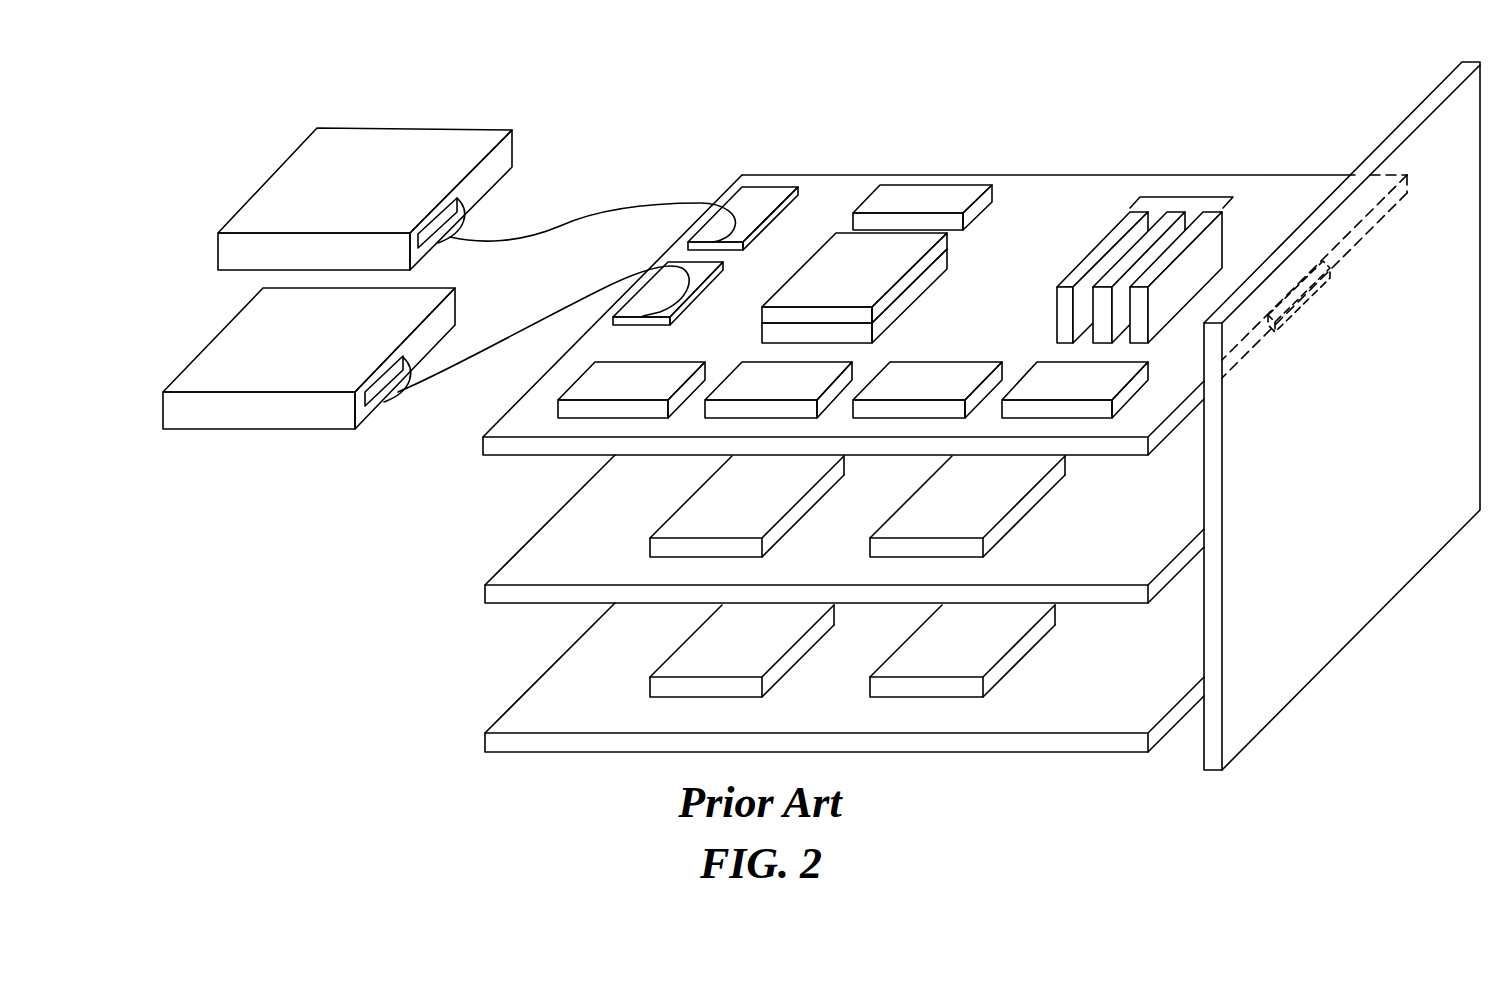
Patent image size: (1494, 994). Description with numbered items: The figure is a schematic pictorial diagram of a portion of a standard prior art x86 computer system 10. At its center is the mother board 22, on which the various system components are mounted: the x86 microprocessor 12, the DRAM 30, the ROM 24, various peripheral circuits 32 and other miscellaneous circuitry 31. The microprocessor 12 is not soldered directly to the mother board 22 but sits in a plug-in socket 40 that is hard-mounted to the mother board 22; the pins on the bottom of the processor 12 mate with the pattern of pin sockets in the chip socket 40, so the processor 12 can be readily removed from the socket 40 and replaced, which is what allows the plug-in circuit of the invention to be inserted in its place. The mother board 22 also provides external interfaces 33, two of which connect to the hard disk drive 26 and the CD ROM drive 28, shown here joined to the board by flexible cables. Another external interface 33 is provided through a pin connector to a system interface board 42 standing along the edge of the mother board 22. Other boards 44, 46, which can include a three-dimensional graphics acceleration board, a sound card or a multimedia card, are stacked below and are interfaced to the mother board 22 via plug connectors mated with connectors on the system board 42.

The x86 computer system 10 is at (941, 78).
The x86 microprocessor 12 is at (937, 248).
The mother board 22 is at (1078, 173).
The ROM 24 is at (927, 180).
The hard disk drive 26 is at (512, 156).
The CD ROM drive 28 is at (457, 310).
The DRAM 30 is at (1185, 198).
The miscellaneous circuitry 31 is at (1140, 380).
The peripheral circuits 32 is at (907, 408).
The external interfaces 33 is at (770, 182).
The plug-in socket 40 is at (920, 287).
The system interface board 42 is at (1362, 426).
The other board 44 is at (510, 557).
The other board 46 is at (517, 697).